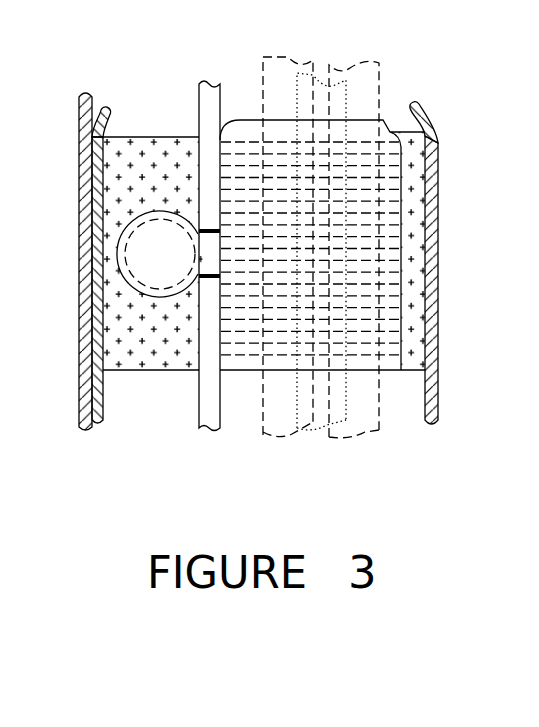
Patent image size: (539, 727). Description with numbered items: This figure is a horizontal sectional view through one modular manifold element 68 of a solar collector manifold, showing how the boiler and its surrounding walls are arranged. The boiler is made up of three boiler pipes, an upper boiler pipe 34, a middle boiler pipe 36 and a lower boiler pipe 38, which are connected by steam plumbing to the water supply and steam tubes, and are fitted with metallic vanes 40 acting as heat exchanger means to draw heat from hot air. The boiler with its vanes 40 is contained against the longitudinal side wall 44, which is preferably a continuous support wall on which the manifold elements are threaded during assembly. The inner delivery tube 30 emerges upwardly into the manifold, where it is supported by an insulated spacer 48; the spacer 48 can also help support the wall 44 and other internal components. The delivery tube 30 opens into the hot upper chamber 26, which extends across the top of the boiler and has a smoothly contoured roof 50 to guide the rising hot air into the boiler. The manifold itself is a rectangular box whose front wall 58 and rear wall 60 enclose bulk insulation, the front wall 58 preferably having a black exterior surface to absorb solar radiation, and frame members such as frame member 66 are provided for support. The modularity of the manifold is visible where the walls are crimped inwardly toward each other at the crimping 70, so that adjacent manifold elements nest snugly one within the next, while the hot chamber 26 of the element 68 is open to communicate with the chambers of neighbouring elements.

The hot upper chamber 26 is at (405, 190).
The inner delivery tube 30 is at (135, 228).
The upper boiler pipe 34 is at (379, 420).
The middle boiler pipe 36 is at (290, 437).
The lower boiler pipe 38 is at (337, 425).
The metallic vanes 40 is at (400, 340).
The outer longitudinal side wall 44 is at (221, 392).
The insulated spacer 48 is at (155, 152).
The smoothly contoured roof 50 is at (400, 253).
The front wall 58 is at (433, 152).
The rear wall 60 is at (91, 170).
The frame member 66 is at (88, 255).
The modular manifold element 68 is at (474, 279).
The crimping 70 is at (104, 117).